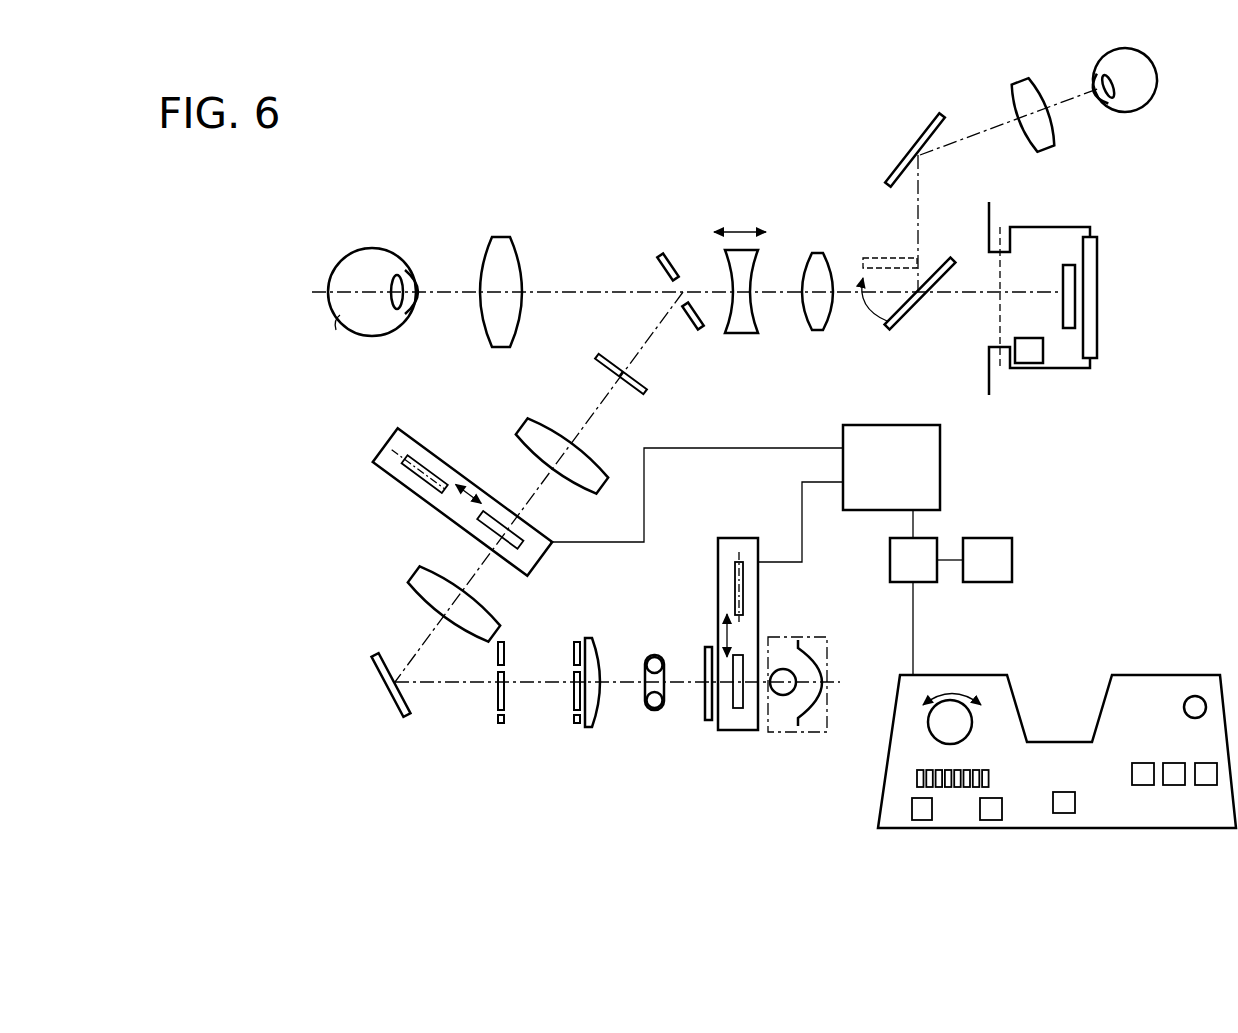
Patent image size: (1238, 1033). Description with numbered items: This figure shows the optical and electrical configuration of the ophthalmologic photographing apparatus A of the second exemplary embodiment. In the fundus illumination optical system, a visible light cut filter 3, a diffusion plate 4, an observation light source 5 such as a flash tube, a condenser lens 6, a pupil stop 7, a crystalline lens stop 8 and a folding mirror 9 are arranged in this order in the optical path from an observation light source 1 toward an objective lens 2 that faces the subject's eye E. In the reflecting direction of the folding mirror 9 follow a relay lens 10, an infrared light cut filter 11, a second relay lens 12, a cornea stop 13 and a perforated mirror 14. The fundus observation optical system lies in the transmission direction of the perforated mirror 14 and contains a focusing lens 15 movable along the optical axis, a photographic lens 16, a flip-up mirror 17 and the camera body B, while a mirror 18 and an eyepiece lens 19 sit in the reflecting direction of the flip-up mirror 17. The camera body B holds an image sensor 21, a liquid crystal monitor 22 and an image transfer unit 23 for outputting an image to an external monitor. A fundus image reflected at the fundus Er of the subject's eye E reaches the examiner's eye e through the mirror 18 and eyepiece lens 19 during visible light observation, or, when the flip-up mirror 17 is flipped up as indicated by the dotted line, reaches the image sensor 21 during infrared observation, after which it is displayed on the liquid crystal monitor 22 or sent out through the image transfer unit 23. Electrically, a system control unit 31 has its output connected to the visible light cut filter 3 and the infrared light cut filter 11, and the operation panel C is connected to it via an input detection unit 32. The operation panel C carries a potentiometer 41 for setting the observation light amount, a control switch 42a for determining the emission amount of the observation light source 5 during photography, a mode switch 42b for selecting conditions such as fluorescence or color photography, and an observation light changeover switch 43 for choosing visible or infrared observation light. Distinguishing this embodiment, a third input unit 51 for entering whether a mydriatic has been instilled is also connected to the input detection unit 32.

The ophthalmic apparatus A is at (578, 168).
The subject's eye E is at (373, 248).
The fundus Er is at (329, 337).
The examiner's eye e is at (1102, 58).
The observation light source 1 is at (800, 636).
The objective lens 2 is at (500, 237).
The visible light cut filter 3 is at (738, 537).
The diffusion plate 4 is at (708, 722).
The observation light source 5 is at (656, 711).
The condenser lens 6 is at (598, 727).
The pupil stop 7 is at (577, 725).
The crystalline lens stop 8 is at (501, 725).
The folding mirror 9 is at (377, 658).
The relay lens 10 is at (419, 578).
The infrared light cut filter 11 is at (385, 446).
The relay lens 12 is at (524, 430).
The cornea stop 13 is at (598, 357).
The perforated mirror 14 is at (660, 254).
The focusing lens 15 is at (741, 334).
The photographic lens 16 is at (817, 331).
The flip-up mirror 17 is at (894, 330).
The mirror 18 is at (923, 120).
The eyepiece lens 19 is at (1020, 82).
The camera body B is at (1030, 226).
The image sensor 21 is at (1066, 264).
The liquid crystal monitor 22 is at (1098, 282).
The image transfer unit 23 is at (1030, 363).
The system control unit 31 is at (942, 468).
The input detection unit 32 is at (888, 562).
The third input unit 51 is at (1014, 560).
The operation panel C is at (1133, 675).
The potentiometer 41 is at (967, 722).
The control switch 42a is at (993, 820).
The mode switch 42b is at (1143, 786).
The observation light changeover switch 43 is at (1194, 696).